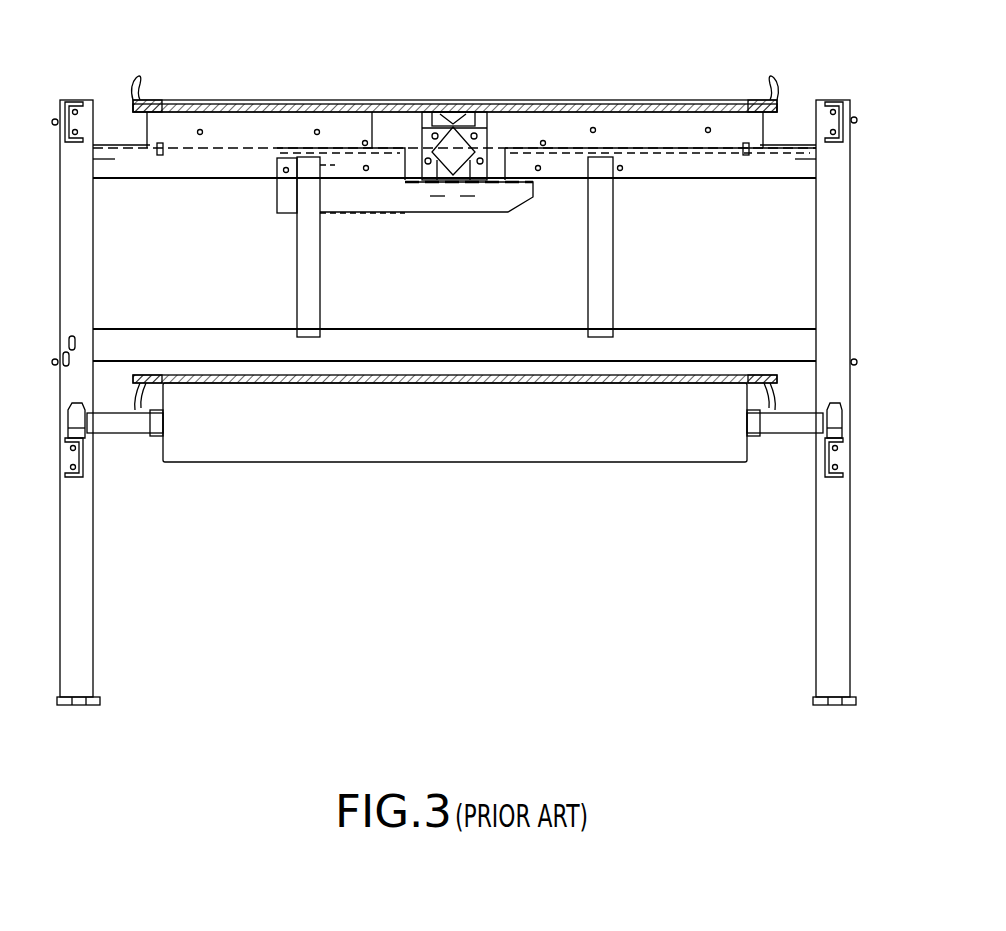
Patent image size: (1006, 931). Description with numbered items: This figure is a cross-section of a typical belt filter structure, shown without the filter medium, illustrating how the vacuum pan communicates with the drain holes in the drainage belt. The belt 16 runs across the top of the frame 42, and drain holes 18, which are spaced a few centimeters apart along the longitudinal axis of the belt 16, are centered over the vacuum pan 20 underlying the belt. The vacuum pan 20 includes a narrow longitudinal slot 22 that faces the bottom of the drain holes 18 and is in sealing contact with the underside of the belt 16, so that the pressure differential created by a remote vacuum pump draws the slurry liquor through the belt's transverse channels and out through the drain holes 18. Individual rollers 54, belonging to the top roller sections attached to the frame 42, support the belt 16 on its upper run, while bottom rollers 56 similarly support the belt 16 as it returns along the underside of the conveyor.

The belt 16 is at (333, 110).
The drain holes 18 is at (455, 128).
The vacuum pan 20 is at (445, 135).
The longitudinal slot 22 is at (458, 126).
The frame 42 is at (853, 289).
The rollers 54 is at (162, 132).
The bottom rollers 56 is at (642, 447).